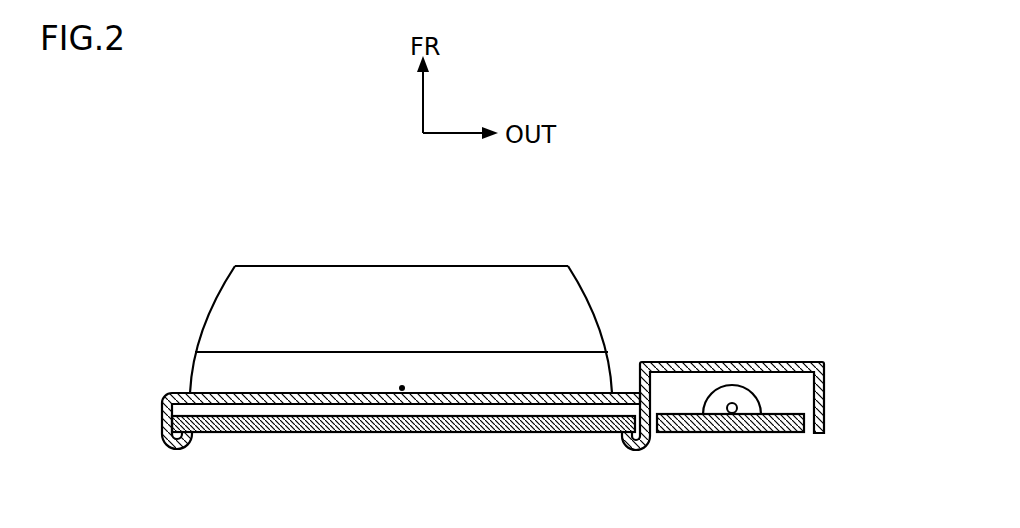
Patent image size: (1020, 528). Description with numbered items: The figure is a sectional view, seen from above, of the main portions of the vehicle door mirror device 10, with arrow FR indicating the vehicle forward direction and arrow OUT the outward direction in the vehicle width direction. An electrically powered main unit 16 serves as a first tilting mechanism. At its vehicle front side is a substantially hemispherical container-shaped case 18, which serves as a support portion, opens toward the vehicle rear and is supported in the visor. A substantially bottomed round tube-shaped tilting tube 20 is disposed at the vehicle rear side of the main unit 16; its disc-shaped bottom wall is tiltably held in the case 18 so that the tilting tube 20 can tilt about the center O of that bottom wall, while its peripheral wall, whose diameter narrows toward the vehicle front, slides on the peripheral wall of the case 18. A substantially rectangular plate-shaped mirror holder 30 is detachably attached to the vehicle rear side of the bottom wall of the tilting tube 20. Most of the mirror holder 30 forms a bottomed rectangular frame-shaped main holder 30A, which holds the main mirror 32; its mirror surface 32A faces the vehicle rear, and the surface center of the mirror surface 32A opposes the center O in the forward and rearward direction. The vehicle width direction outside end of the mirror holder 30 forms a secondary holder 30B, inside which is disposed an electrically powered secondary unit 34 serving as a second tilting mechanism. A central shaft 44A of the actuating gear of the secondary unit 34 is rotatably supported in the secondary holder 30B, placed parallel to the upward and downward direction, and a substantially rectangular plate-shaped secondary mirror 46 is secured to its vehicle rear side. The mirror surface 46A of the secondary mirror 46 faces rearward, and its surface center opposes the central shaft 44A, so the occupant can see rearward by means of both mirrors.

The vehicle door mirror device 10 is at (240, 190).
The main unit 16 is at (234, 264).
The case 18 is at (205, 310).
The tilting tube 20 is at (193, 372).
The mirror holder 30 is at (162, 420).
The main holder 30A is at (305, 398).
The secondary holder 30B is at (680, 362).
The main mirror 32 is at (343, 433).
The mirror surface 32A is at (510, 433).
The center O is at (404, 388).
The central shaft 44A is at (733, 403).
The secondary unit 34 is at (760, 367).
The secondary mirror 46 is at (705, 433).
The mirror surface 46A is at (765, 433).